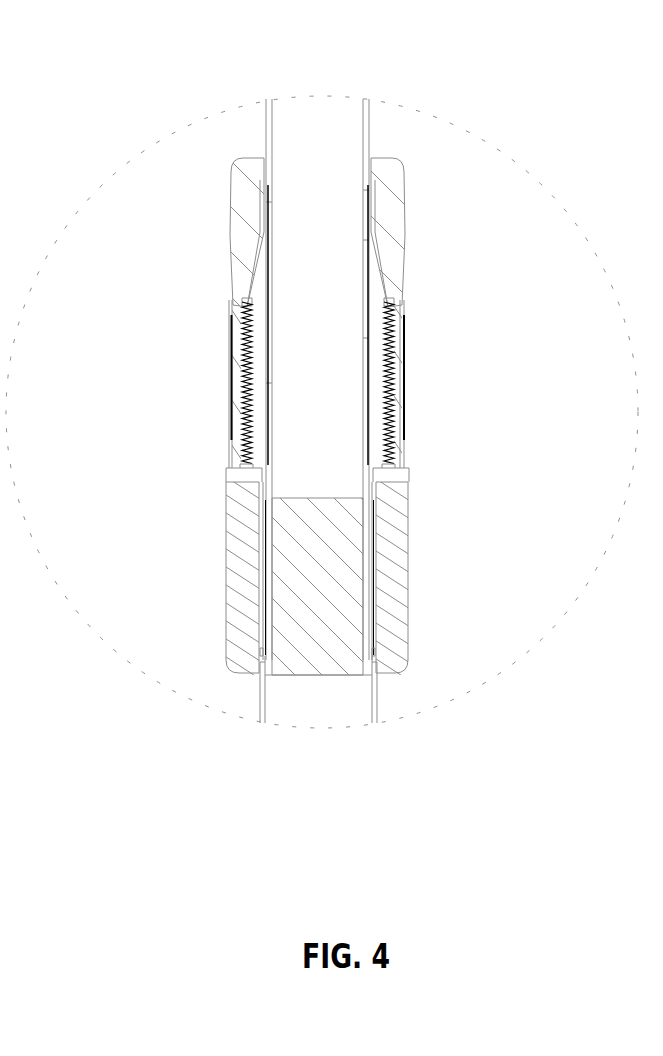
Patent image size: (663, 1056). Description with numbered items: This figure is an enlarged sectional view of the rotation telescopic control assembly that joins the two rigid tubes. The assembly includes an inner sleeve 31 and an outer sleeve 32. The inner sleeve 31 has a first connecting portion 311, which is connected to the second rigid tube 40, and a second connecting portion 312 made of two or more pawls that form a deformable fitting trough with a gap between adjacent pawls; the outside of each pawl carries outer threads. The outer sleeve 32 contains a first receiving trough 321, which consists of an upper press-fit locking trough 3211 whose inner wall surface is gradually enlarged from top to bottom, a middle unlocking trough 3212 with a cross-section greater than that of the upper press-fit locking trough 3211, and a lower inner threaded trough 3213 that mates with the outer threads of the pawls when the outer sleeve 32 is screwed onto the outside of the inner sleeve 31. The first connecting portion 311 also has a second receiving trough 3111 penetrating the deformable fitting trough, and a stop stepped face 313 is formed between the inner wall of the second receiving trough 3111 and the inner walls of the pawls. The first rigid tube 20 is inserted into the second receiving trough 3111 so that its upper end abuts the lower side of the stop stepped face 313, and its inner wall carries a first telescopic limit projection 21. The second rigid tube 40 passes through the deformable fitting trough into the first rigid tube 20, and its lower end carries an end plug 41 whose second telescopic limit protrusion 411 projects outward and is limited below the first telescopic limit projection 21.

The second rigid tube 40 is at (368, 122).
The first receiving trough 321 is at (243, 295).
The upper press-fit locking trough 3211 is at (259, 216).
The middle unlocking trough 3212 is at (258, 287).
The lower inner threaded trough 3213 is at (193, 386).
The outer sleeve 32 is at (400, 290).
The second connecting portion 312 is at (376, 312).
The stop stepped face 313 is at (385, 465).
The inner sleeve 31 is at (357, 556).
The first connecting portion 311 is at (393, 537).
The second receiving trough 3111 is at (373, 494).
The end plug 41 is at (253, 583).
The second telescopic limit protrusion 411 is at (262, 678).
The first rigid tube 20 is at (254, 703).
The first telescopic limit projection 21 is at (260, 648).